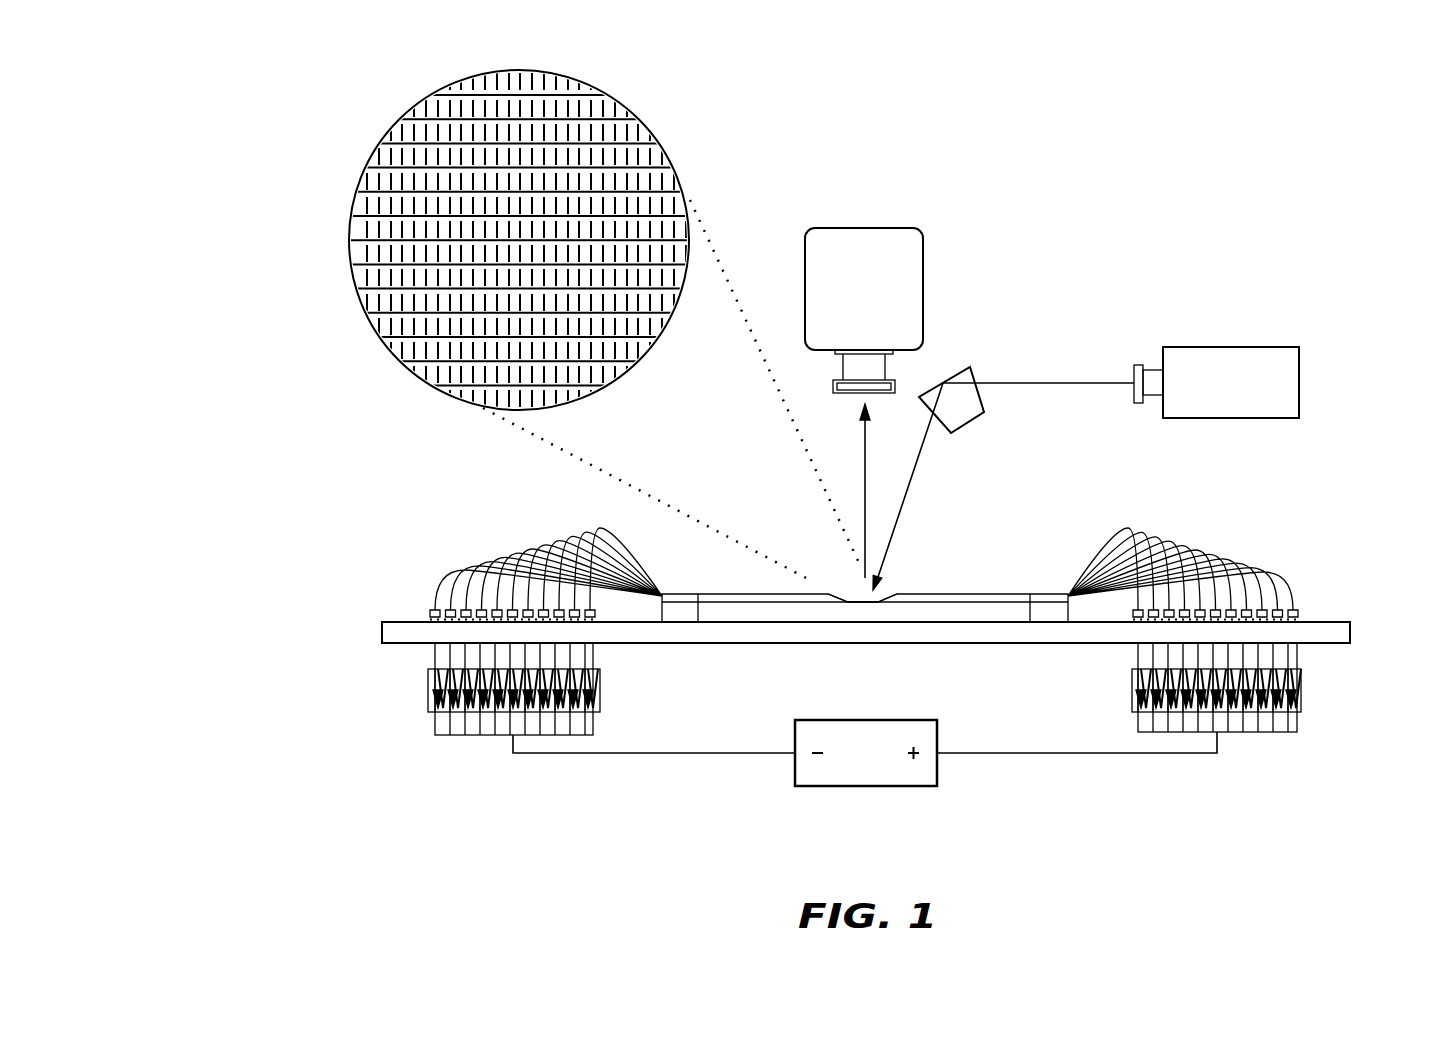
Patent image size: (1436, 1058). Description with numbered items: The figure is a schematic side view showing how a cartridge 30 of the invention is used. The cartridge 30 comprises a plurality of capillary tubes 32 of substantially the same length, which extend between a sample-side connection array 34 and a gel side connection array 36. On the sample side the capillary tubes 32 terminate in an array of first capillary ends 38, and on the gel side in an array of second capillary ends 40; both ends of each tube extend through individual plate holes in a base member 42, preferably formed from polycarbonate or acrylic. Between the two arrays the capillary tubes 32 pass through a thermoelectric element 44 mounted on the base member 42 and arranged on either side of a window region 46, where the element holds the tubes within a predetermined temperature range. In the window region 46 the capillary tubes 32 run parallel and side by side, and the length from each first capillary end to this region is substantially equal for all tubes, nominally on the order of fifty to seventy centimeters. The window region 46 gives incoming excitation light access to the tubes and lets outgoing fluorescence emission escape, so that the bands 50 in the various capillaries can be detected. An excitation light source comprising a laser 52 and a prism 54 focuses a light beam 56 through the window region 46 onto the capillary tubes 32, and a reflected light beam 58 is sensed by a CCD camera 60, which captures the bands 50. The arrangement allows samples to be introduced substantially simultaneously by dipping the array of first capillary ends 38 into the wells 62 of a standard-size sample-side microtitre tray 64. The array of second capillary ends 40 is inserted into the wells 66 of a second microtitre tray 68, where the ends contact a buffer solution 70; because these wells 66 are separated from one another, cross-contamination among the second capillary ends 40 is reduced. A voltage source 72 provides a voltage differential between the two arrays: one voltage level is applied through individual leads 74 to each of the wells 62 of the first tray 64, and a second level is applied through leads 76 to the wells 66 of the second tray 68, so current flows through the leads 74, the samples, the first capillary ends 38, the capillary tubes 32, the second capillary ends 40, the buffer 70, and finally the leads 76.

The cartridge 30 is at (300, 653).
The capillary tubes 32 is at (1230, 540).
The sample-side connection array 34 is at (425, 600).
The gel side connection array 36 is at (1318, 600).
The array of first capillary ends 38 is at (593, 650).
The array of second capillary ends 40 is at (1297, 648).
The base member 42 is at (1350, 632).
The thermoelectric element 44 is at (787, 600).
The window region 46 is at (870, 603).
The bands 50 is at (613, 183).
The laser 52 is at (1232, 347).
The prism 54 is at (967, 367).
The light beam 56 is at (897, 527).
The reflected light beam 58 is at (865, 462).
The CCD camera 60 is at (862, 228).
The wells 62 is at (428, 682).
The sample-side microtitre tray 64 is at (463, 726).
The wells 66 is at (1297, 685).
The second microtitre tray 68 is at (1210, 686).
The buffer solution 70 is at (1132, 677).
The voltage source 72 is at (797, 785).
The leads 74 is at (593, 730).
The leads 76 is at (1137, 727).